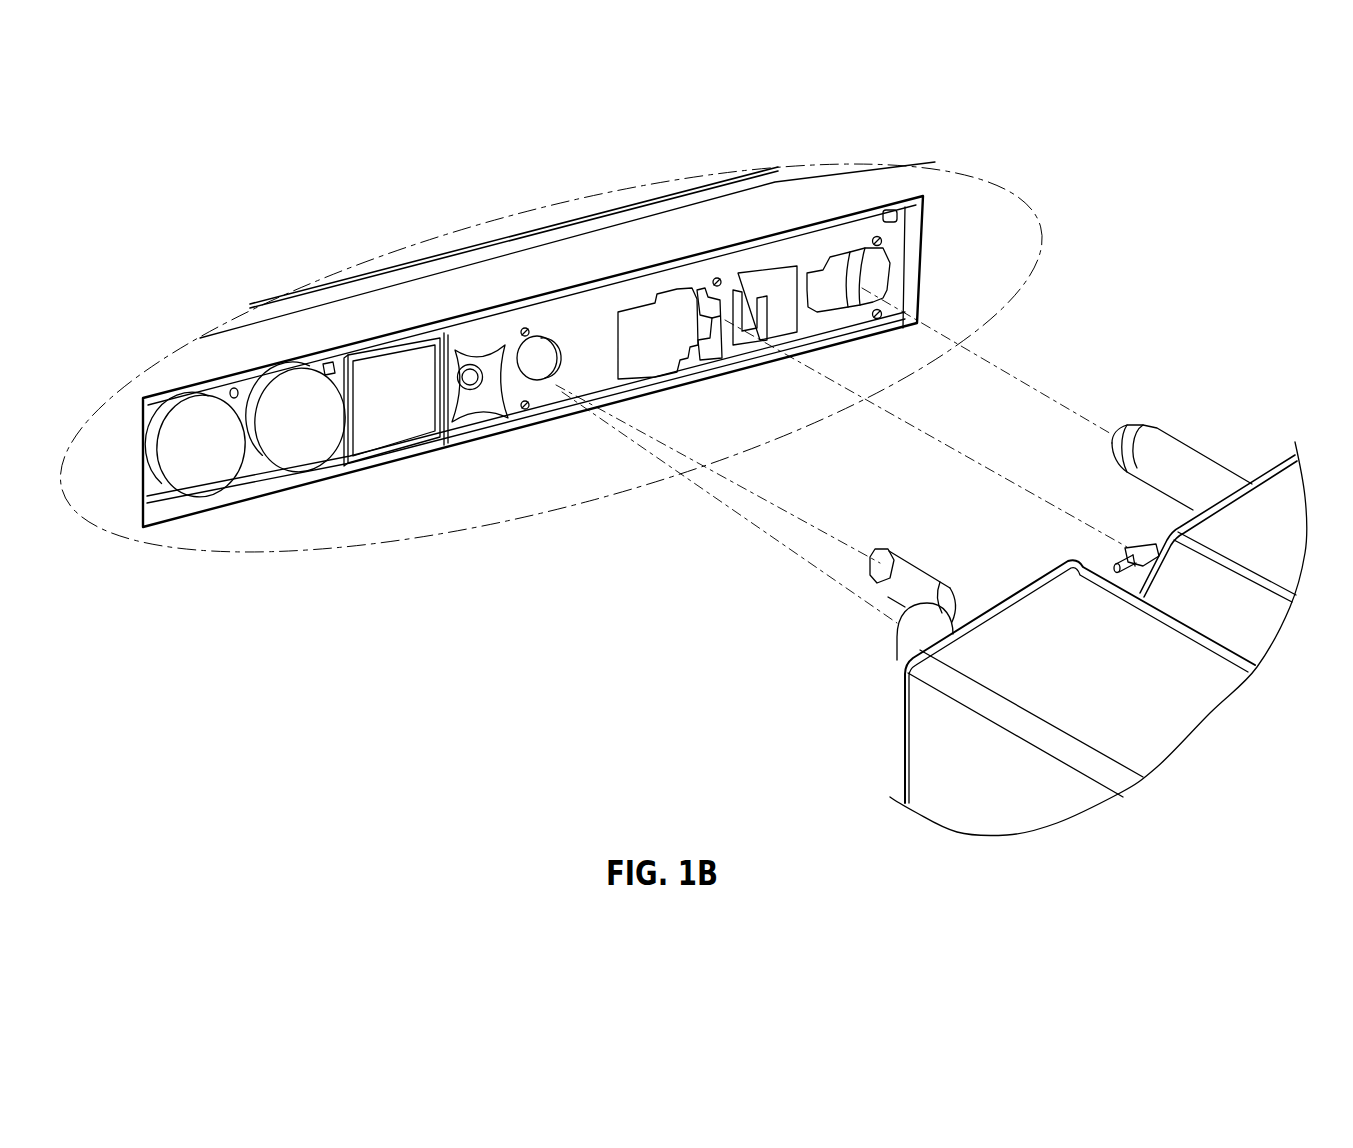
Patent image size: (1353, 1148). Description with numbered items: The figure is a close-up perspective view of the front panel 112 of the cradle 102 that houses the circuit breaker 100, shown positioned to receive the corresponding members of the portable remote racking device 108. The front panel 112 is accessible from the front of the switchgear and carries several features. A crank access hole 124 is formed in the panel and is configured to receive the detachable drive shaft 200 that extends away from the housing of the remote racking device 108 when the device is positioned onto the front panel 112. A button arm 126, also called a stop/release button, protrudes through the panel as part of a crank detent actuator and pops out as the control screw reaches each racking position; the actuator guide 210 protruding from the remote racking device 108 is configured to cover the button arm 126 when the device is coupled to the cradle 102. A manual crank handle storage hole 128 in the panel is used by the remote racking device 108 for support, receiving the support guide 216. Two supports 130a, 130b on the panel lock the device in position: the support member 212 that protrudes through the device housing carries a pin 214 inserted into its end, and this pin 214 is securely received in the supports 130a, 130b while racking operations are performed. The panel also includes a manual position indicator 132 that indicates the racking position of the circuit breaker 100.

The circuit breaker 100 is at (378, 267).
The cradle 102 is at (288, 337).
The remote racking device 108 is at (807, 673).
The front panel 112 is at (975, 210).
The crank access hole 124 is at (537, 385).
The button arm 126 is at (463, 363).
The manual crank handle storage hole 128 is at (853, 313).
The support 130a is at (707, 337).
The support 130b is at (747, 317).
The manual position indicator 132 is at (652, 338).
The detachable drive shaft 200 is at (908, 568).
The actuator guide 210 is at (908, 643).
The support member 212 is at (1127, 547).
The pin 214 is at (1165, 543).
The support guide 216 is at (1190, 447).